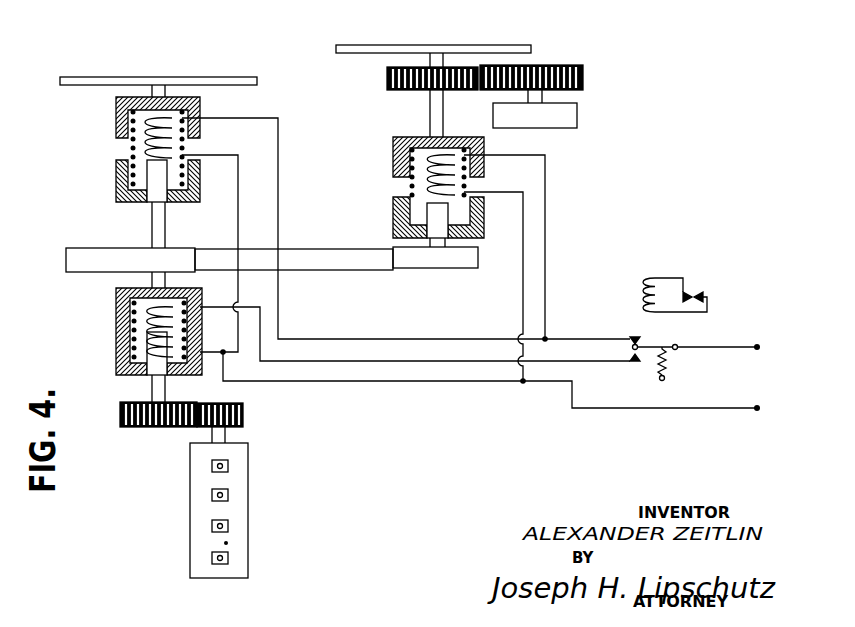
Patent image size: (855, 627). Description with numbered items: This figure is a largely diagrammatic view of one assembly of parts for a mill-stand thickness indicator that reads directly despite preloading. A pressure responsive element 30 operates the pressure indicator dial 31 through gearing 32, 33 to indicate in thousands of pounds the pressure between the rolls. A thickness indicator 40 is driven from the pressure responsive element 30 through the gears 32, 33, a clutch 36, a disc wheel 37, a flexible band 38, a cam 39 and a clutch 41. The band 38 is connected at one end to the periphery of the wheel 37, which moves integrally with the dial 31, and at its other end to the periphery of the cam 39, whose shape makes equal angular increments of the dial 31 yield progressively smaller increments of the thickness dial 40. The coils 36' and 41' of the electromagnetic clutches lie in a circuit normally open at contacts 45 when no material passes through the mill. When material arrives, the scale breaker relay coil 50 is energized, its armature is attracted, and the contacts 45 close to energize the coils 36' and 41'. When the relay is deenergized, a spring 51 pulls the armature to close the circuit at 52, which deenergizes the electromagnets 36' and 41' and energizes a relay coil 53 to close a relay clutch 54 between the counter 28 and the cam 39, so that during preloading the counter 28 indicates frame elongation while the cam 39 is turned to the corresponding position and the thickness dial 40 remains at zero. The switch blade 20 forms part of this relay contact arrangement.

The switch blade 20 is at (646, 346).
The counter 28 is at (193, 510).
The pressure responsive element 30 is at (556, 117).
The pressure indicator dial 31 is at (496, 50).
The gear 32 is at (553, 65).
The gear 33 is at (387, 82).
The clutch 36 is at (420, 183).
The coil 36' is at (410, 176).
The disc wheel 37 is at (440, 262).
The flexible band 38 is at (342, 270).
The cam 39 is at (104, 262).
The thickness indicator 40 is at (112, 77).
The clutch 41 is at (136, 149).
The coil 41' is at (128, 148).
The contacts 45 is at (632, 338).
The relay coil 50 is at (643, 290).
The spring 51 is at (658, 362).
The contact 52 is at (630, 360).
The relay coil 53 is at (120, 302).
The relay clutch 54 is at (120, 353).